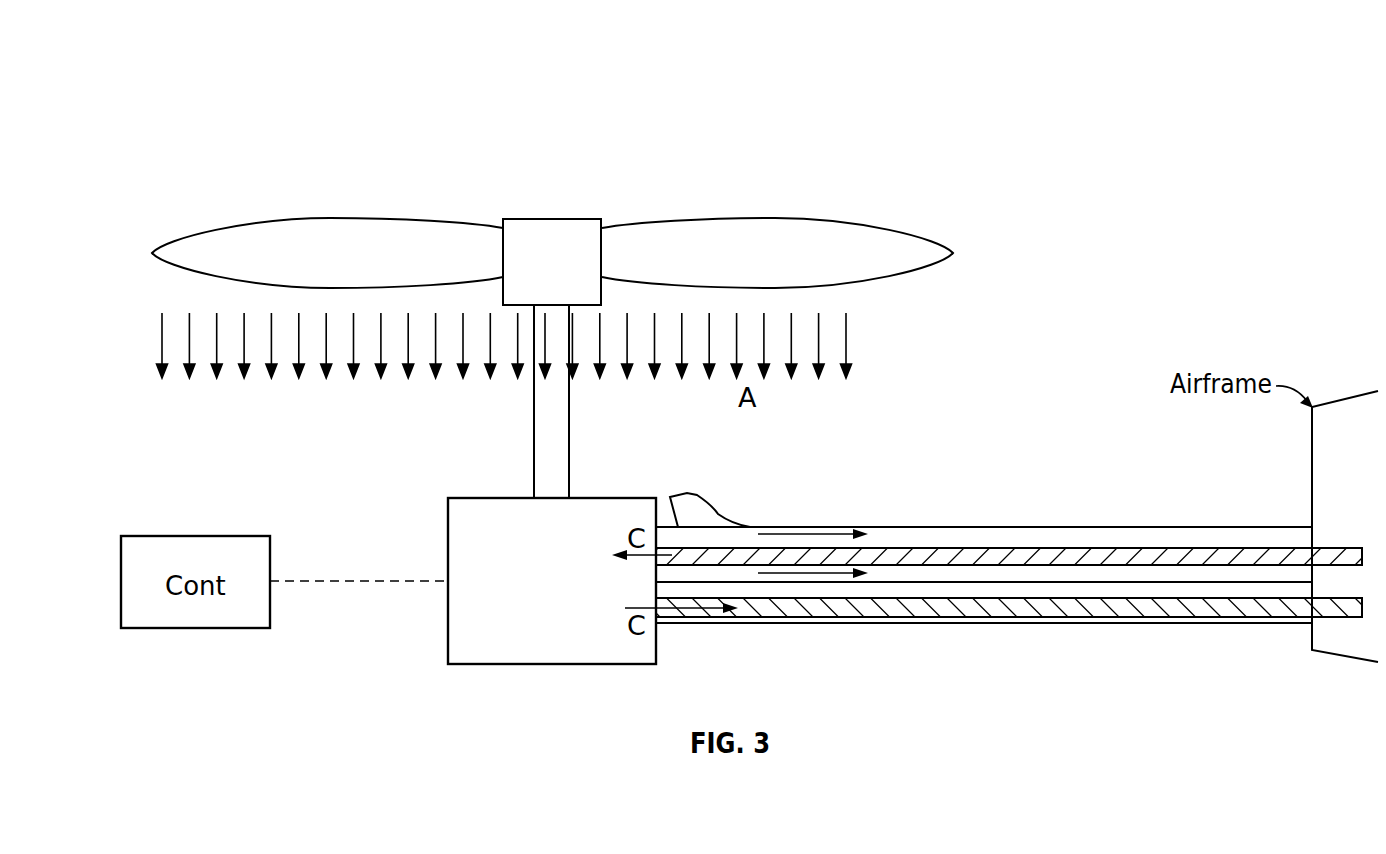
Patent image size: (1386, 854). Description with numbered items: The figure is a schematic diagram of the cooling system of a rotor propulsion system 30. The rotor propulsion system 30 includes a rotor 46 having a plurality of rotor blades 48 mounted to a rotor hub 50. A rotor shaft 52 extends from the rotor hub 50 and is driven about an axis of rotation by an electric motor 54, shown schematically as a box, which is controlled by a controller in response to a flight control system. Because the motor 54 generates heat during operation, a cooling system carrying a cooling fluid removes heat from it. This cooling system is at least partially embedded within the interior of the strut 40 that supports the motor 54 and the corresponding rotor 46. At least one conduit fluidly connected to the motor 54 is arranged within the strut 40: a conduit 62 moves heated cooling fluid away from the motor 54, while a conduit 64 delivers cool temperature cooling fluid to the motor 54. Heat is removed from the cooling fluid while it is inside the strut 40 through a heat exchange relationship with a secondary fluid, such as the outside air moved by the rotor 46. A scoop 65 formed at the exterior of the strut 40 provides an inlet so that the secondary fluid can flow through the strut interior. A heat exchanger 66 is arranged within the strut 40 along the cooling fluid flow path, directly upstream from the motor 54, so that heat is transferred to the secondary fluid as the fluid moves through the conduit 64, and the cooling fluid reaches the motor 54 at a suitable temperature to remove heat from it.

The rotor propulsion system 30 is at (1126, 150).
The rotor 46 is at (155, 236).
The rotor blades 48 is at (297, 240).
The rotor hub 50 is at (553, 239).
The rotor shaft 52 is at (560, 432).
The electric motor 54 is at (568, 596).
The conduit 62 is at (925, 612).
The conduit 64 is at (983, 553).
The scoop 65 is at (692, 513).
The heat exchanger 66 is at (1065, 533).
The strut 40 is at (1103, 625).